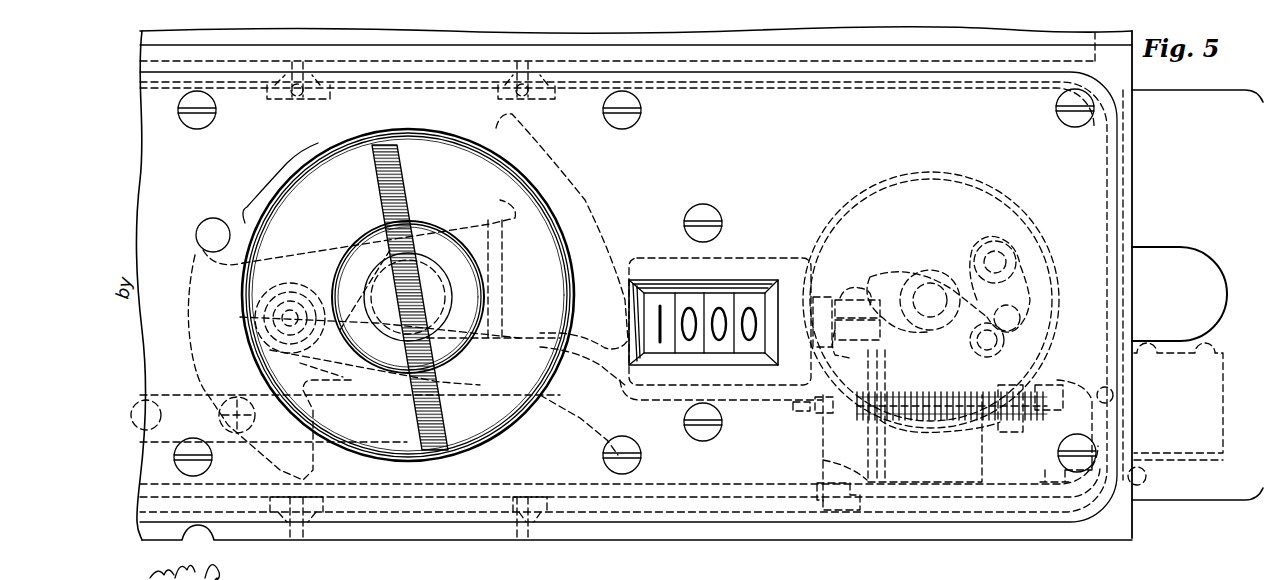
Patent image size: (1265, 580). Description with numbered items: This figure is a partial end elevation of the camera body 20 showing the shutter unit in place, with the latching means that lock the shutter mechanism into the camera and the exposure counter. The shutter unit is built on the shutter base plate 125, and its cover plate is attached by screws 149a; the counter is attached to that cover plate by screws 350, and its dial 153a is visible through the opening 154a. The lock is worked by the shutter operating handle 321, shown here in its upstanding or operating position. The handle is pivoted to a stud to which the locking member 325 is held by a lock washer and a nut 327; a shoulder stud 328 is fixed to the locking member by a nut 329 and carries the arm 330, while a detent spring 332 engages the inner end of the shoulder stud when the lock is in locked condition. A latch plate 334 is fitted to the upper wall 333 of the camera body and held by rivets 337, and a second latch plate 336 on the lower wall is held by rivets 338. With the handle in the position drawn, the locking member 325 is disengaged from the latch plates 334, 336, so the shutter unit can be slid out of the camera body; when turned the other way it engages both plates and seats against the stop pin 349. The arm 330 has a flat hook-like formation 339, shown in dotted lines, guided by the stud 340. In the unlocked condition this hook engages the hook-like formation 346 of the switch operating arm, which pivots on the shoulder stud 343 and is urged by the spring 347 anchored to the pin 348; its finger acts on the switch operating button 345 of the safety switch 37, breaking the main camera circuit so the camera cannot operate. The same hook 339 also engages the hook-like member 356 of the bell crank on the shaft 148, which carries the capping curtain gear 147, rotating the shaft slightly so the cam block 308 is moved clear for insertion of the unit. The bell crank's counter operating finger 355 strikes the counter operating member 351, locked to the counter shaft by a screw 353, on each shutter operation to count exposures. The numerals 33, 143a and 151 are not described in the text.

The camera body 20 is at (1125, 516).
The housing extension 33 is at (1241, 93).
The safety switch 37 is at (1210, 398).
The shutter base plate 125 is at (745, 488).
The mounting screw 143a is at (202, 467).
The capping curtain gear 147 is at (978, 190).
The shaft 148 is at (934, 285).
The screws 149a is at (200, 122).
The wheel rim 151 is at (280, 183).
The dial 153a is at (728, 292).
The opening 154a is at (658, 287).
The cam block 308 is at (1030, 272).
The shutter operating handle 321 is at (405, 213).
The locking member 325 is at (594, 190).
The nut 327 is at (305, 335).
The shoulder stud 328 is at (296, 292).
The nut 329 is at (255, 318).
The arm 330 is at (575, 418).
The detent spring 332 is at (348, 433).
The upper wall 333 is at (283, 100).
The latch plate 334 is at (417, 94).
The second latch plate 336 is at (450, 500).
The rivets 337 is at (545, 100).
The rivets 338 is at (305, 530).
The hook-like formation 339 is at (890, 452).
The stud 340 is at (820, 468).
The shoulder stud 343 is at (985, 455).
The switch operating button 345 is at (1085, 384).
The hook-like formation 346 is at (805, 416).
The spring 347 is at (915, 392).
The pin 348 is at (1038, 440).
The pin 349 is at (213, 218).
The screws 350 is at (712, 212).
The counter operating member 351 is at (886, 330).
The screw 353 is at (846, 292).
The counter operating finger 355 is at (984, 352).
The hook-like member 356 is at (858, 265).